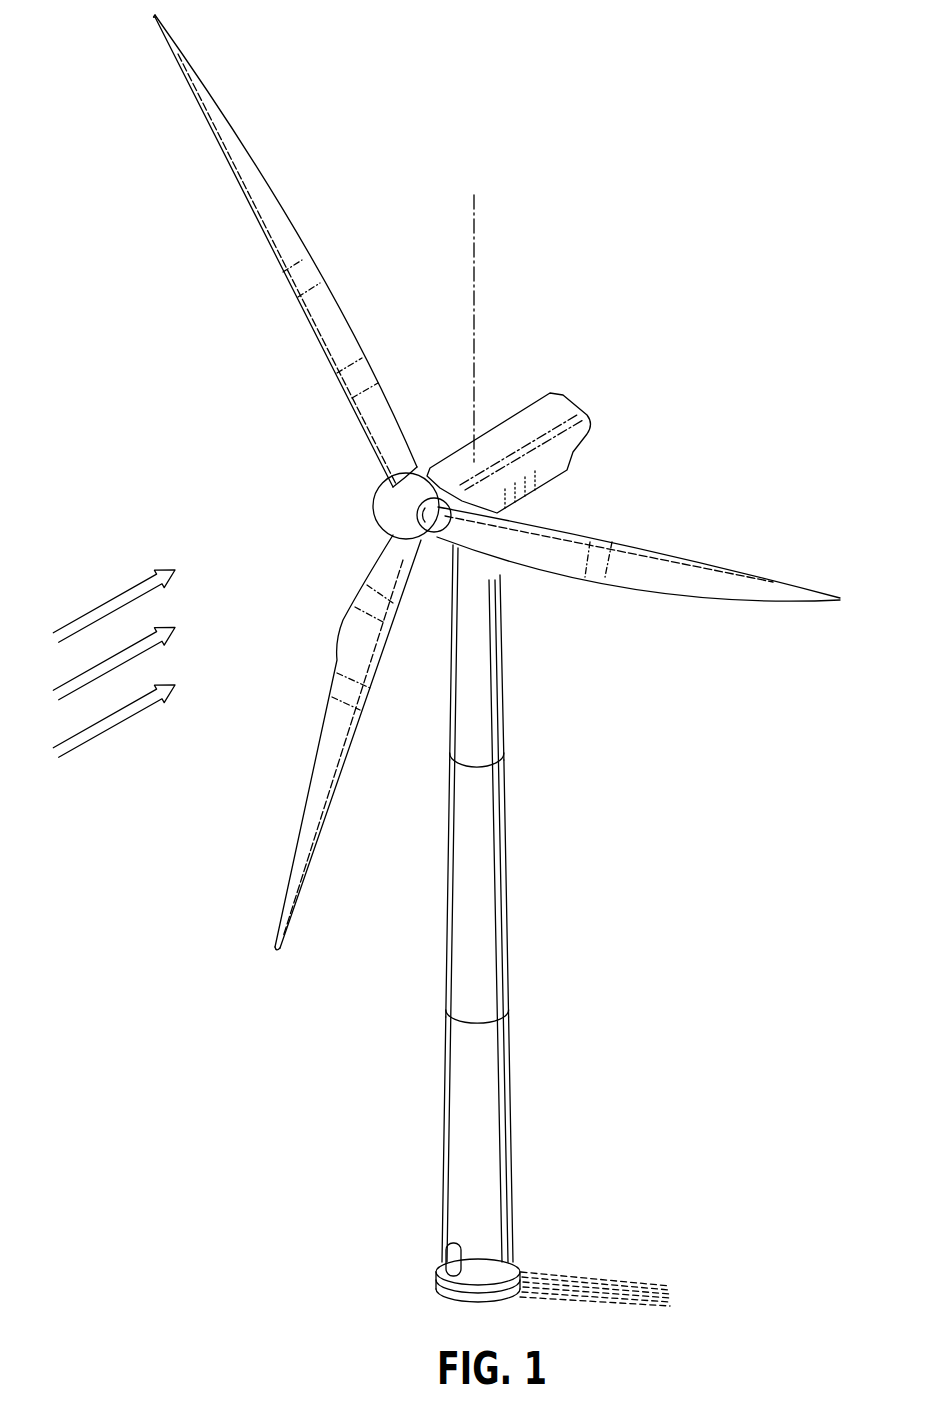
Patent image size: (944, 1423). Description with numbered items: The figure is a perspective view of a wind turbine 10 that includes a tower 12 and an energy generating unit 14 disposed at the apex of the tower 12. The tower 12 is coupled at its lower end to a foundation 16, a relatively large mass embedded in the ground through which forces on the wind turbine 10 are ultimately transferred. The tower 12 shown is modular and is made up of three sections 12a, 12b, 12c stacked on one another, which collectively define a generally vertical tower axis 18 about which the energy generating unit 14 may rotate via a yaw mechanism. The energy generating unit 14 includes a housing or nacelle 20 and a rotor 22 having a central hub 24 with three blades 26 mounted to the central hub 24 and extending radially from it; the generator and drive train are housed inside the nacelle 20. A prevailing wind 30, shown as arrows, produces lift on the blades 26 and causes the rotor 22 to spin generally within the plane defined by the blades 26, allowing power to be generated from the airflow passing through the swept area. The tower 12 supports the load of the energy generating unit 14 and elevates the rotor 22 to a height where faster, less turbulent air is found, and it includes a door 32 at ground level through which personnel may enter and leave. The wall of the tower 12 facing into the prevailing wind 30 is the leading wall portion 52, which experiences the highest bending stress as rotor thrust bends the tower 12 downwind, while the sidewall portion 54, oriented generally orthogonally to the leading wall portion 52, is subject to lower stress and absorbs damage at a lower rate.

The wind turbine 10 is at (677, 344).
The tower 12 is at (514, 888).
The tower section 12a is at (505, 673).
The tower section 12b is at (507, 813).
The tower section 12c is at (510, 1098).
The energy generating unit 14 is at (575, 402).
The foundation 16 is at (517, 1273).
The tower axis 18 is at (474, 255).
The nacelle 20 is at (535, 410).
The rotor 22 is at (375, 534).
The central hub 24 is at (390, 509).
The blades 26 is at (268, 198).
The prevailing wind 30 is at (127, 595).
The door 32 is at (450, 1250).
The leading wall portion 52 is at (452, 1165).
The sidewall portion 54 is at (505, 1180).